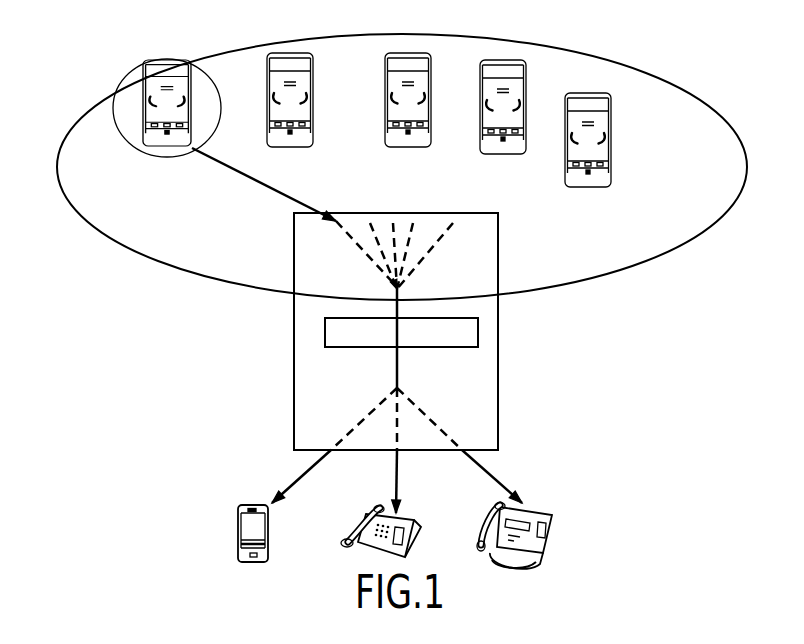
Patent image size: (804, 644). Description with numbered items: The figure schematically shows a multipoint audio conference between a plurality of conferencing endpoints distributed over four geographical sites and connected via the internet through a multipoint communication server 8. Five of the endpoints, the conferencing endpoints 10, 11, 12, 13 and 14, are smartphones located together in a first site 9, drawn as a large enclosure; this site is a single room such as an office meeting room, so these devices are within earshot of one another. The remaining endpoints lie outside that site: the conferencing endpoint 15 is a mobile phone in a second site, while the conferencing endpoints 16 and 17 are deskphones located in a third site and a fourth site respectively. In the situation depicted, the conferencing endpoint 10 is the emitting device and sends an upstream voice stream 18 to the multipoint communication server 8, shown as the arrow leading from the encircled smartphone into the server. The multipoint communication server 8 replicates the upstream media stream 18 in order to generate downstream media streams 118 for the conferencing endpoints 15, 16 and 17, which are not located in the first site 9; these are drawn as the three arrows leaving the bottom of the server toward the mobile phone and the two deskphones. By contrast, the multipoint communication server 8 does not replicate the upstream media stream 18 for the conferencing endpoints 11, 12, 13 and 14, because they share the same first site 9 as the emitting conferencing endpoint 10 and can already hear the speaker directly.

The multipoint communication server 8 is at (498, 333).
The first site 9 is at (712, 105).
The conferencing endpoint 10 is at (167, 60).
The conferencing endpoint 11 is at (290, 53).
The conferencing endpoint 12 is at (408, 53).
The conferencing endpoint 13 is at (507, 60).
The conferencing endpoint 14 is at (590, 93).
The conferencing endpoint 15 is at (238, 528).
The conferencing endpoint 16 is at (343, 543).
The conferencing endpoint 17 is at (553, 530).
The upstream voice stream 18 is at (263, 186).
The downstream media streams 118 is at (516, 443).